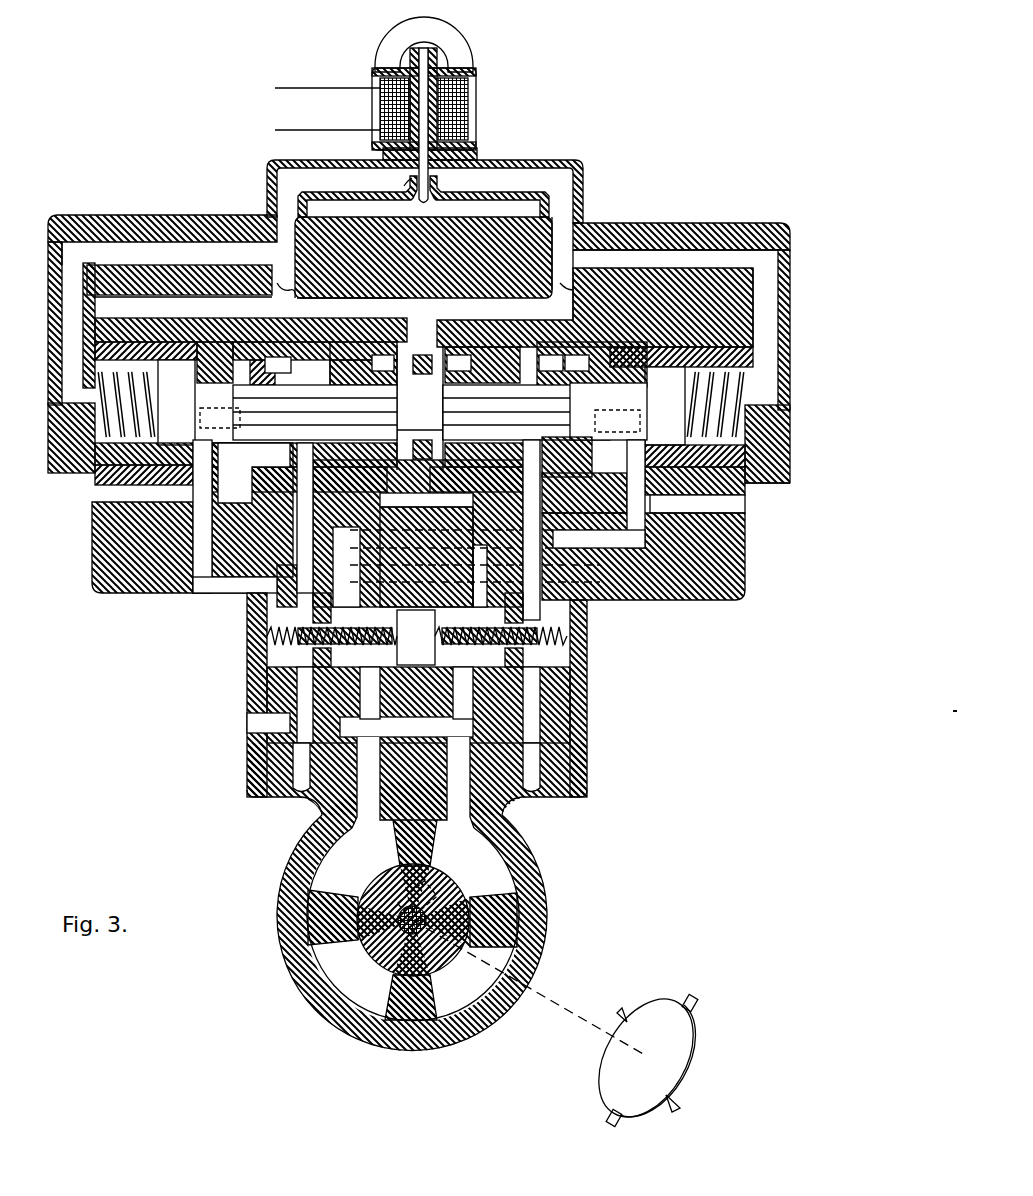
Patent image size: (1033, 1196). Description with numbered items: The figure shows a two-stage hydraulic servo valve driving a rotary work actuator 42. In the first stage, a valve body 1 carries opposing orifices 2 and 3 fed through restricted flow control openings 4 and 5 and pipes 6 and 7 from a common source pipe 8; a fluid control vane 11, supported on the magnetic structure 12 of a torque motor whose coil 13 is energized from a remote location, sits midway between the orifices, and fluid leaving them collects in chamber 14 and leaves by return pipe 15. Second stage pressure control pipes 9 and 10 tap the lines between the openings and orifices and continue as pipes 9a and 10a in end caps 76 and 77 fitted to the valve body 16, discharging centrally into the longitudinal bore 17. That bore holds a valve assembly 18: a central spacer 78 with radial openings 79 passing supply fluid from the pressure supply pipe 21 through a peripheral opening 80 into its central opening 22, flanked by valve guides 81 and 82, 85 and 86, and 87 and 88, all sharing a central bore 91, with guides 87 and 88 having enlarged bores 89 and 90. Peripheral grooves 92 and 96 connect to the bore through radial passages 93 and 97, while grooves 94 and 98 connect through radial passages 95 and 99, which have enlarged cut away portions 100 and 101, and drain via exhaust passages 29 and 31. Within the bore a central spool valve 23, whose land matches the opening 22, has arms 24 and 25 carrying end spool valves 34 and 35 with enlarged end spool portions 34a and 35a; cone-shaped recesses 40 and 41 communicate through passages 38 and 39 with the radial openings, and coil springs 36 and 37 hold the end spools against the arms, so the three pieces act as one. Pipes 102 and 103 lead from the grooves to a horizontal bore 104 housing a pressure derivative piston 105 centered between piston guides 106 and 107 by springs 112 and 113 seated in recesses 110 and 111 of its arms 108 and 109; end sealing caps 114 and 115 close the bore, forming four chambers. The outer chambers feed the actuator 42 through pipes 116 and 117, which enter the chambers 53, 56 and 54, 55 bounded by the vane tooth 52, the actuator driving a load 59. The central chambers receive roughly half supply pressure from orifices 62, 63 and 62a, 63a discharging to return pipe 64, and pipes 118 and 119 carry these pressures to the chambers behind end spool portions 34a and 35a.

The valve body 1 is at (574, 158).
The orifice 2 is at (408, 185).
The orifice 3 is at (433, 187).
The restricted flow control opening 4 is at (285, 272).
The restricted flow control opening 5 is at (572, 275).
The pipe 6 is at (284, 300).
The pipe 7 is at (505, 325).
The common source pipe 8 is at (60, 305).
The second stage pressure control pipe 9 is at (138, 250).
The control pipe 9a is at (62, 250).
The second stage pressure control pipe 10 is at (672, 250).
The control pipe 10a is at (765, 252).
The fluid control vane 11 is at (466, 157).
The magnetic structure 12 is at (474, 118).
The torque motor control winding 13 is at (466, 100).
The reservoir chamber 14 is at (500, 205).
The return pipe 15 is at (312, 209).
The valve body 16 is at (750, 218).
The longitudinal bore 17 is at (133, 322).
The valve assembly 18 is at (548, 430).
The pressure supply pipe 21 is at (405, 318).
The central opening 22 is at (416, 421).
The central spool valve 23 is at (419, 428).
The arm 24 is at (332, 432).
The arm 25 is at (474, 421).
The fluid exhaust passage 29 is at (160, 500).
The fluid exhaust passage 31 is at (712, 510).
The end spool valve 34 is at (228, 393).
The enlarged end spool portion 34a is at (184, 379).
The end spool valve 35 is at (593, 398).
The enlarged end spool portion 35a is at (674, 388).
The coil spring 36 is at (92, 404).
The coil spring 37 is at (742, 405).
The fluid passage 38 is at (265, 410).
The fluid passage 39 is at (567, 414).
The cone-shaped recess 40 is at (192, 407).
The cone-shaped recess 41 is at (645, 410).
The work actuator 42 is at (250, 928).
The tooth 52 is at (450, 916).
The chamber 53 is at (374, 855).
The chamber 54 is at (466, 855).
The chamber 55 is at (358, 976).
The chamber 56 is at (475, 976).
The load 59 is at (703, 1020).
The orifice 62 is at (372, 515).
The orifice 62a is at (470, 515).
The orifice 63 is at (372, 707).
The orifice 63a is at (466, 707).
The return pipe 64 is at (258, 722).
The end cap 76 is at (58, 214).
The end cap 77 is at (765, 222).
The spacer 78 is at (420, 352).
The radial opening 79 is at (443, 390).
The peripheral opening 80 is at (448, 345).
The valve guide 81 is at (392, 371).
The valve guide 82 is at (467, 371).
The valve guide 85 is at (287, 373).
The valve guide 86 is at (559, 371).
The valve guide 87 is at (92, 480).
The valve guide 88 is at (750, 488).
The enlarged bore diameter 89 is at (155, 430).
The enlarged bore diameter 90 is at (683, 440).
The central longitudinal bore 91 is at (348, 398).
The peripheral groove 92 is at (335, 358).
The radial passage 93 is at (297, 380).
The peripheral groove 94 is at (235, 355).
The radial passage 95 is at (237, 380).
The peripheral cut away portion 96 is at (515, 355).
The radial passage 97 is at (506, 382).
The peripheral cut away portion 98 is at (592, 368).
The radial opening 99 is at (603, 390).
The enlarged cut away portion 100 is at (243, 414).
The enlarged cut away portion 101 is at (613, 433).
The pipe 102 is at (305, 548).
The pipe 103 is at (583, 568).
The longitudinal horizontal bore 104 is at (588, 608).
The pressure derivative piston 105 is at (430, 630).
The piston guide 106 is at (335, 622).
The piston guide 107 is at (525, 620).
The outstanding arm 108 is at (340, 655).
The outstanding arm 109 is at (485, 652).
The spring seating recess 110 is at (292, 645).
The spring seating recess 111 is at (530, 655).
The central biasing spring 112 is at (255, 617).
The central biasing spring 113 is at (573, 638).
The end sealing cap 114 is at (248, 655).
The end sealing cap 115 is at (590, 655).
The pipe 116 is at (300, 755).
The pipe 117 is at (533, 755).
The pipe 118 is at (262, 580).
The pipe 119 is at (615, 545).